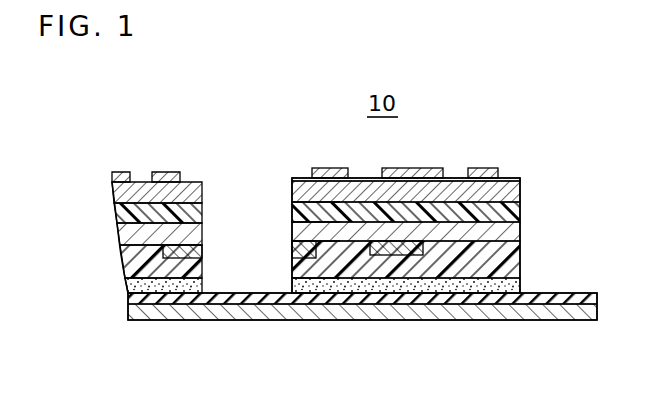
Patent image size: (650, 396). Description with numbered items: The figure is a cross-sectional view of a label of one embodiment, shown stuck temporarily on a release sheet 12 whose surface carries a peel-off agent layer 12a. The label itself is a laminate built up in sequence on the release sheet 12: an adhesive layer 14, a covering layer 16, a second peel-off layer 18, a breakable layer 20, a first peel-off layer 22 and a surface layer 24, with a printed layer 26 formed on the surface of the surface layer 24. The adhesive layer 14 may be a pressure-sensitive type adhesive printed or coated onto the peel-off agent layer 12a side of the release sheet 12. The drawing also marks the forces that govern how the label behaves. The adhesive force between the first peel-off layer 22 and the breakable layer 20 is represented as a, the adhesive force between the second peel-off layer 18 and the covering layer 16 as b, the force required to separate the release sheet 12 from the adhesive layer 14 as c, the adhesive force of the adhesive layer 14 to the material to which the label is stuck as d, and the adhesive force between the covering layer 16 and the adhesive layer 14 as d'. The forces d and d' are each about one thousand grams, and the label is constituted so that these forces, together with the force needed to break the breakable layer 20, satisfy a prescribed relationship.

The release sheet 12 is at (488, 307).
The peel-off agent layer 12a is at (418, 296).
The adhesive layer 14 is at (500, 285).
The covering layer 16 is at (510, 270).
The second peel-off layer 18 is at (520, 240).
The breakable layer 20 is at (500, 230).
The first peel-off layer 22 is at (520, 200).
The surface layer 24 is at (518, 178).
The printed layer 26 is at (490, 167).
The adhesive force between first peel-off layer and breakable layer a is at (305, 212).
The adhesive force between second peel-off layer and covering layer b is at (305, 240).
The force required for separating release sheet from adhesive layer c is at (333, 277).
The adhesive force of adhesive layer d is at (293, 282).
The adhesive force between covering layer and adhesive layer d' is at (369, 329).